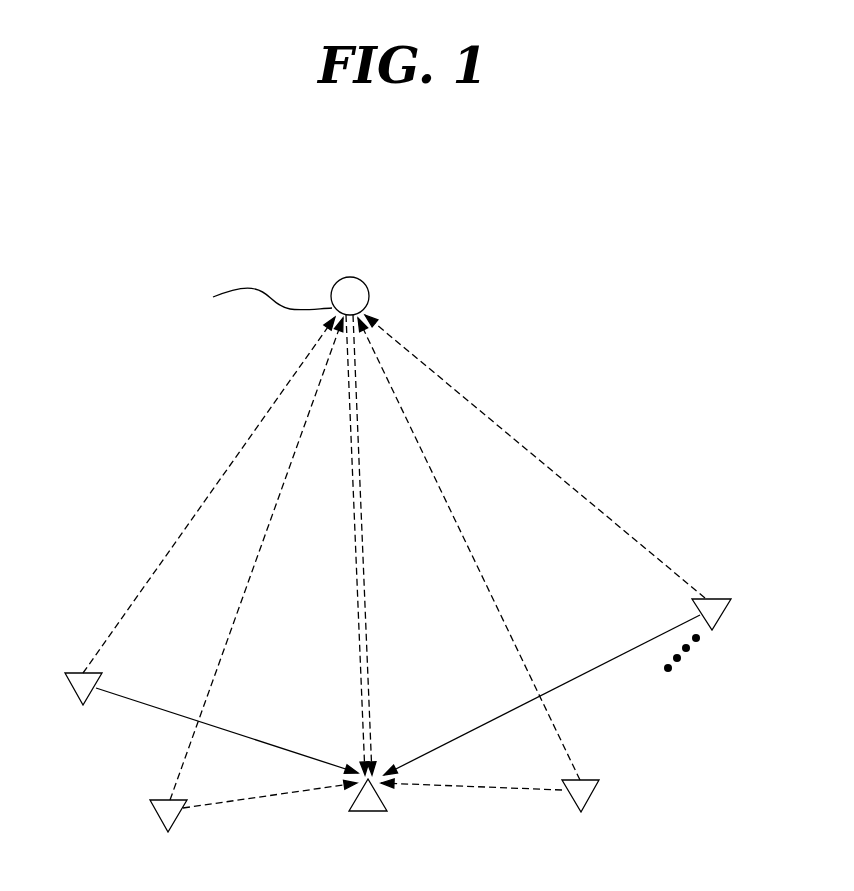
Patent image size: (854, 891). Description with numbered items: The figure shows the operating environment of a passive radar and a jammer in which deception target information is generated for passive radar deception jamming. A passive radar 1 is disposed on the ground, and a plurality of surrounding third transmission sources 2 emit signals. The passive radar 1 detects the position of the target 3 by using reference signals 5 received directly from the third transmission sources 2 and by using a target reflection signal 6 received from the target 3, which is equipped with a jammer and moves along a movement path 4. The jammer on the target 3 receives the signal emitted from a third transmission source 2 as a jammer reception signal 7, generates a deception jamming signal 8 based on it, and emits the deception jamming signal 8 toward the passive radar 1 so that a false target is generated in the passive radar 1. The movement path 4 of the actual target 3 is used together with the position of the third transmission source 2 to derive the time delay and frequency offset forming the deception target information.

The passive radar 1 is at (368, 812).
The third transmission source 2 is at (710, 598).
The target 3 is at (349, 279).
The movement path 4 is at (280, 293).
The reference signal 5 is at (593, 668).
The target reflection signal 6 is at (359, 618).
The jammer reception signal 7 is at (604, 511).
The deception jamming signal 8 is at (366, 618).